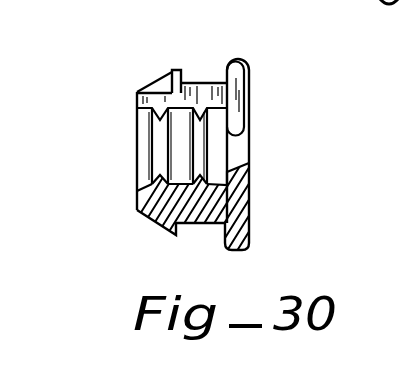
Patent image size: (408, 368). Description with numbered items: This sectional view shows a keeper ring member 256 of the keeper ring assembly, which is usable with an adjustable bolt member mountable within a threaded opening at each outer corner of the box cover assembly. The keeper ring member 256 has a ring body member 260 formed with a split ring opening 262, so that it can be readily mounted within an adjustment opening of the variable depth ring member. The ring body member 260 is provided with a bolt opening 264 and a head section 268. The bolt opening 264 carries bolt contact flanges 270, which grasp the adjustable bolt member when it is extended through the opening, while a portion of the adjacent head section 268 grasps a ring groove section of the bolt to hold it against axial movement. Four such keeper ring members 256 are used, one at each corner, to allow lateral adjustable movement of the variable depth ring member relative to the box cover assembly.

The keeper ring member 256 is at (250, 72).
The ring body member 260 is at (201, 83).
The split ring opening 262 is at (163, 94).
The bolt opening 264 is at (137, 118).
The head section 268 is at (230, 172).
The bolt contact flanges 270 is at (142, 188).